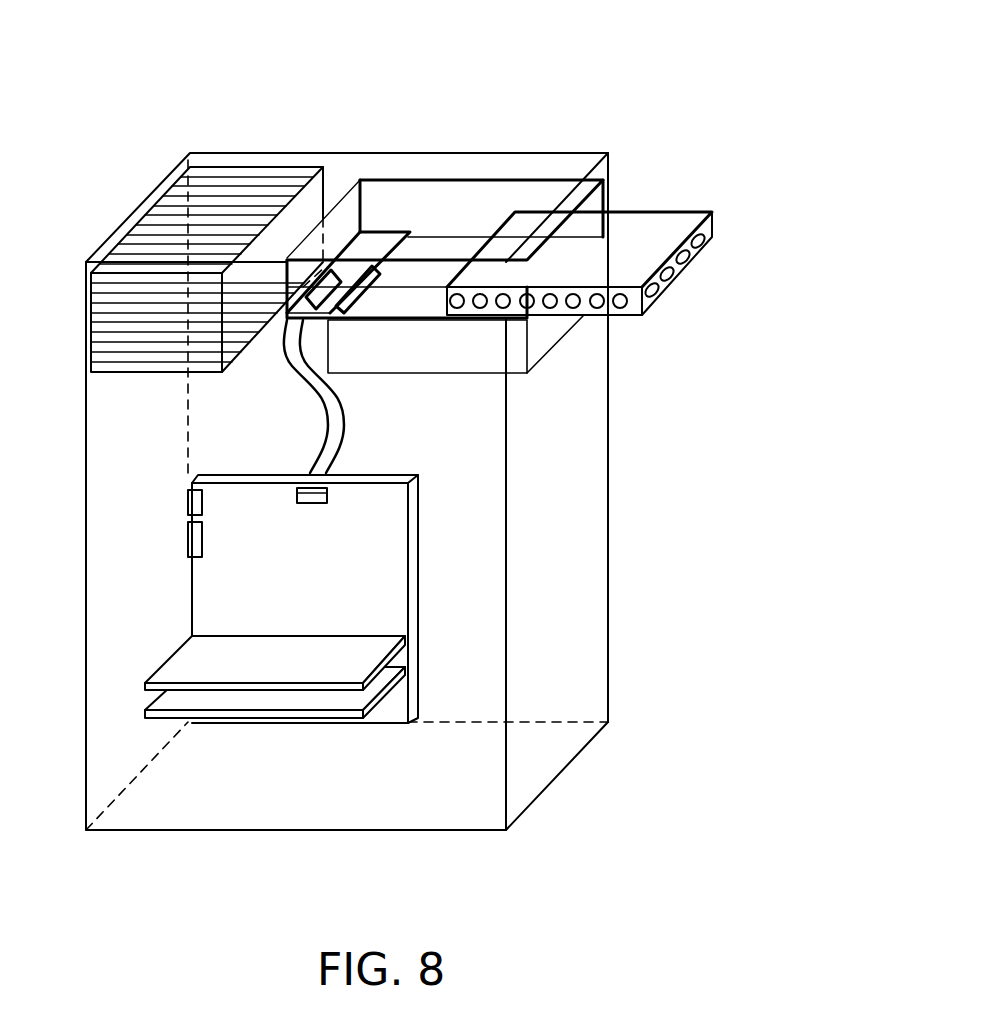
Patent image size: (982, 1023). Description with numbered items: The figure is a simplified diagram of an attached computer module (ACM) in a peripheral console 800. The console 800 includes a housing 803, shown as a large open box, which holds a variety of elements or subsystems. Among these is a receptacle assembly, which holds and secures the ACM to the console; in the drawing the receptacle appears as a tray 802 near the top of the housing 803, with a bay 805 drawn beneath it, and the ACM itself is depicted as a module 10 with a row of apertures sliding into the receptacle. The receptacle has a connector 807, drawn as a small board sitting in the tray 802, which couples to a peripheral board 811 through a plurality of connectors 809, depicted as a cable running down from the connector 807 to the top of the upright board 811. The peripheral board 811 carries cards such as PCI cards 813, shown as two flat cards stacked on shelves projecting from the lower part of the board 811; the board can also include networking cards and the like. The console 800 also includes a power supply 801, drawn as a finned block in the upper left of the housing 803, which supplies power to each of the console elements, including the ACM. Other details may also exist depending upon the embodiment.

The peripheral console 800 is at (705, 44).
The power supply 801 is at (232, 190).
The chassis tray 802 is at (530, 198).
The housing 803 is at (583, 583).
The drive bay 805 is at (515, 360).
The connector 807 is at (365, 247).
The connectors 809 is at (338, 427).
The peripheral board 811 is at (393, 537).
The PCI cards 813 is at (388, 647).
The storage module with apertures 10 is at (643, 316).